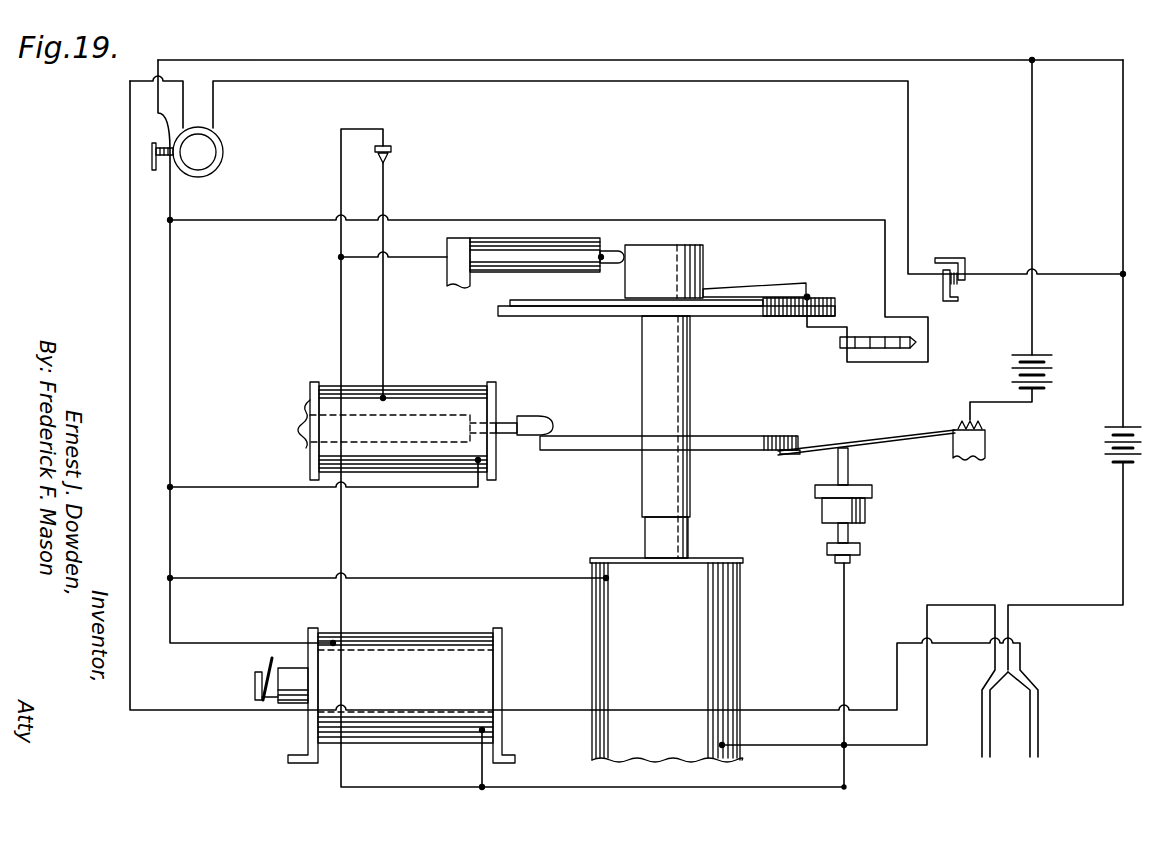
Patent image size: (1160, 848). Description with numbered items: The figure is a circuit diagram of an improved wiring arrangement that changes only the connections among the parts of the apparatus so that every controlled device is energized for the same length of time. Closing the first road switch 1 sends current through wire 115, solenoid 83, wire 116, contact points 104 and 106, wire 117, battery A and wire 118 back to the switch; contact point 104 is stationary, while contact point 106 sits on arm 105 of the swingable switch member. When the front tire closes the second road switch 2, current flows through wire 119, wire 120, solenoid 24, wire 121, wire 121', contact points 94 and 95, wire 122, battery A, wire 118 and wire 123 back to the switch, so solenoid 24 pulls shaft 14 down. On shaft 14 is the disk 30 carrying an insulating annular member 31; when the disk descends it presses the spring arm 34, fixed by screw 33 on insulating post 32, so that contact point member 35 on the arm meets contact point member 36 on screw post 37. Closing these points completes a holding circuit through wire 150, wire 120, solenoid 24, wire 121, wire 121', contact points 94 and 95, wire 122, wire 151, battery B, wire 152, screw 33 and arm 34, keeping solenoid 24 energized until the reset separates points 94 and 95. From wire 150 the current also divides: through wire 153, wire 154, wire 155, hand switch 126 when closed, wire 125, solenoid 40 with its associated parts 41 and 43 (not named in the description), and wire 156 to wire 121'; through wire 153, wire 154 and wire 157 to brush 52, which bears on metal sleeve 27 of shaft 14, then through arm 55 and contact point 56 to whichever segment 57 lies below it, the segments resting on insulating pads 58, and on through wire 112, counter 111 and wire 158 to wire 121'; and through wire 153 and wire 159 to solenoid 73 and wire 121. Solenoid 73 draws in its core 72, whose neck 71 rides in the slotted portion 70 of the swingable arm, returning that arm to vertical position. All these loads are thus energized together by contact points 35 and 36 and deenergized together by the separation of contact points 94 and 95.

The first road switch 1 is at (1038, 691).
The second road switch 2 is at (975, 696).
The shaft 14 is at (738, 349).
The solenoid 24 is at (746, 591).
The metal sleeve 27 is at (705, 253).
The disk 30 is at (770, 436).
The annular member 31 is at (738, 452).
The post 32 is at (987, 448).
The screw 33 is at (964, 418).
The spring arm 34 is at (927, 430).
The contact point member 35 is at (849, 453).
The contact point member 36 is at (849, 473).
The screw post 37 is at (850, 530).
The solenoid 40 is at (462, 384).
The plunger 41 is at (283, 399).
The plunger head 43 is at (540, 416).
The brush 52 is at (618, 253).
The arm 55 is at (753, 288).
The contact point 56 is at (810, 290).
The metal segments 57 is at (812, 296).
The insulating pads 58 is at (540, 316).
The downwardly extending portion 70 is at (262, 670).
The neck 71 is at (268, 703).
The core 72 is at (292, 673).
The solenoid 73 is at (440, 668).
The solenoid 83 is at (206, 150).
The contact point 94 is at (158, 113).
The contact point 95 is at (153, 172).
The stationary contact point 104 is at (943, 290).
The arm 105 is at (943, 257).
The contact point 106 is at (960, 284).
The counter 111 is at (888, 345).
The wire 112 is at (820, 332).
The wire 115 is at (188, 712).
The wire 116 is at (614, 83).
The wire 117 is at (1075, 274).
The wire 118 is at (1123, 519).
The wire 119 is at (884, 748).
The wire 120 is at (776, 744).
The wire 121 is at (389, 557).
The wire 121' is at (204, 298).
The wire 122 is at (668, 60).
The wire 123 is at (1055, 605).
The wire 125 is at (386, 311).
The hand switch 126 is at (395, 156).
The wire 150 is at (846, 598).
The wire 151 is at (1033, 142).
The wire 152 is at (1003, 404).
The wire 153 is at (645, 787).
The wire 154 is at (341, 514).
The wire 155 is at (352, 128).
The wire 156 is at (384, 488).
The wire 157 is at (430, 258).
The wire 158 is at (545, 219).
The wire 159 is at (488, 768).
The battery A is at (1114, 462).
The battery B is at (1036, 357).